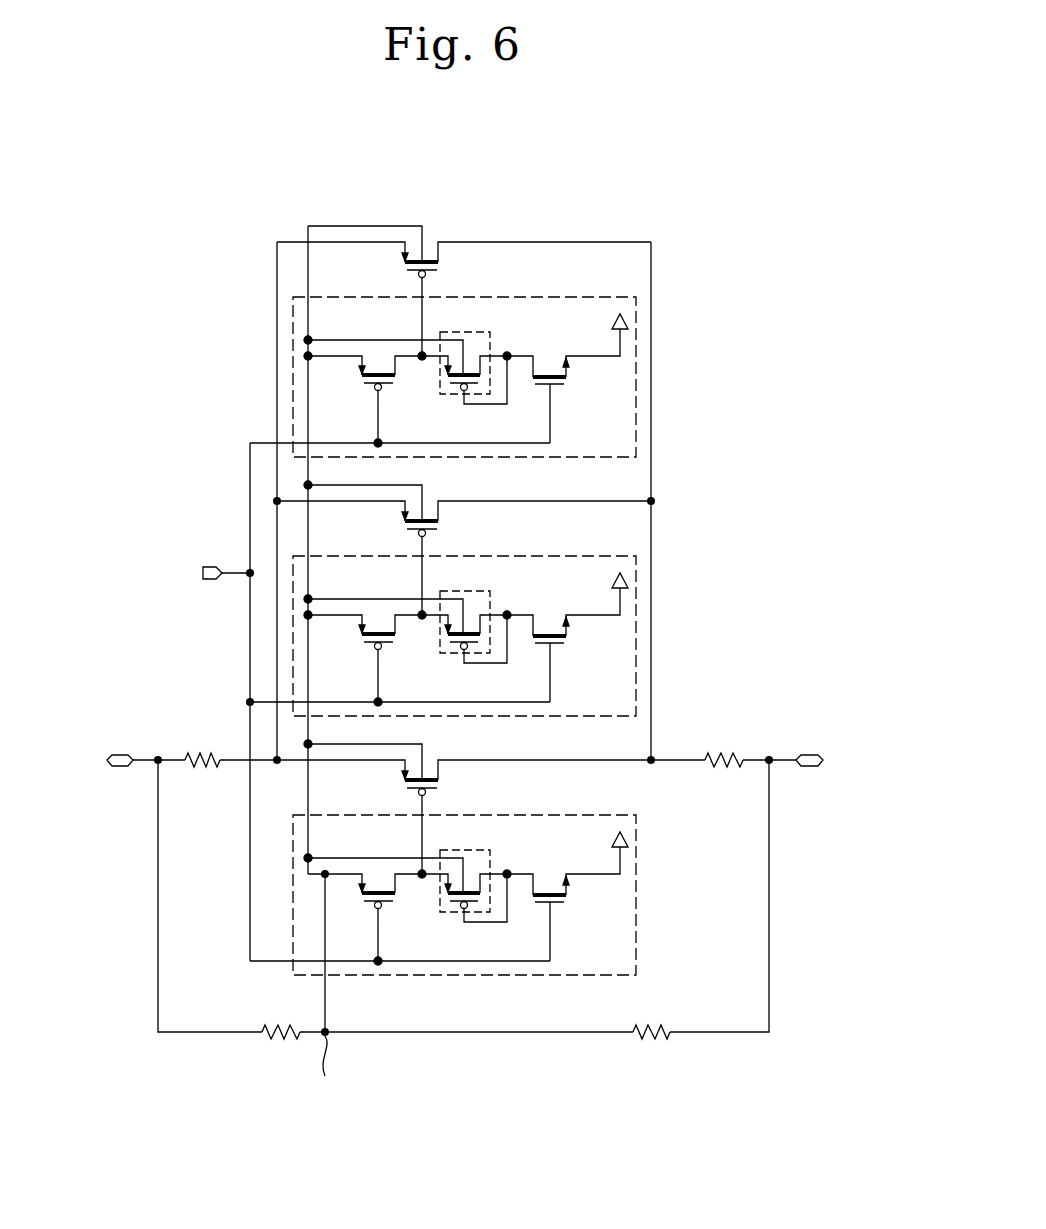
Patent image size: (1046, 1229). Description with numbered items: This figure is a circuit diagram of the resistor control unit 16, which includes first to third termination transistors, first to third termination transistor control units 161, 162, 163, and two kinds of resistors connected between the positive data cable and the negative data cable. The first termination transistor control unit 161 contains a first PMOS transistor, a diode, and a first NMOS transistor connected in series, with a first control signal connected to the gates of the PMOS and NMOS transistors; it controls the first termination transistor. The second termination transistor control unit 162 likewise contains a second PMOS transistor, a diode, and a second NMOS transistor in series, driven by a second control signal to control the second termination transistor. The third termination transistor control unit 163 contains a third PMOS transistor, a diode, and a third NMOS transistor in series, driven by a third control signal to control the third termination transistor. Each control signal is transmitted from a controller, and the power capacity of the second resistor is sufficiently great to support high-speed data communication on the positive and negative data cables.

The resistor control unit 16 is at (782, 181).
The first termination transistor control unit 161 is at (636, 918).
The second termination transistor control unit 162 is at (636, 659).
The third termination transistor control unit 163 is at (636, 400).